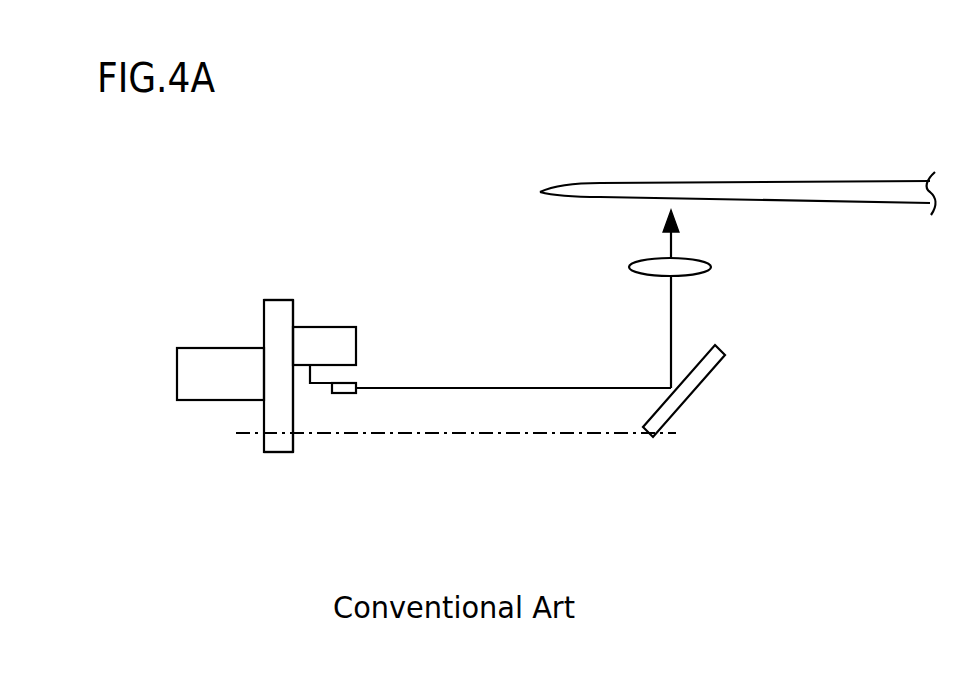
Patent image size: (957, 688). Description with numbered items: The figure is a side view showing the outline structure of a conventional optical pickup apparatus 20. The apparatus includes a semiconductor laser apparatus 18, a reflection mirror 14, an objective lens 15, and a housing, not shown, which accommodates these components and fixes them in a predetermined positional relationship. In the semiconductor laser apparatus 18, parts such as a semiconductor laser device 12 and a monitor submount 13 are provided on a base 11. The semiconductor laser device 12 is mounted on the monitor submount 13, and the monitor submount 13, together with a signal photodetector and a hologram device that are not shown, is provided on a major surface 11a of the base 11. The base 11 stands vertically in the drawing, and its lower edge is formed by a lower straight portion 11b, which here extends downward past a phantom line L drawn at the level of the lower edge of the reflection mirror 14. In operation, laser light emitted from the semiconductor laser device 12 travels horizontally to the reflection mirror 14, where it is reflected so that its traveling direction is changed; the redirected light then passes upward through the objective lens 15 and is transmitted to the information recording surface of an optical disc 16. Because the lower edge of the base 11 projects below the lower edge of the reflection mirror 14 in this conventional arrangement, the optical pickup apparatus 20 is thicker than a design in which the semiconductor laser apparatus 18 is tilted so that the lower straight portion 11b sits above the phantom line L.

The optical pickup apparatus 20 is at (312, 152).
The base 11 is at (254, 296).
The major surface 11a is at (294, 315).
The lower straight portion 11b is at (278, 298).
The monitor submount 13 is at (348, 376).
The semiconductor laser device 12 is at (342, 387).
The phantom line L is at (562, 433).
The reflection mirror 14 is at (562, 391).
The objective lens 15 is at (699, 299).
The optical disc 16 is at (715, 193).
The semiconductor laser apparatus 18 is at (317, 477).